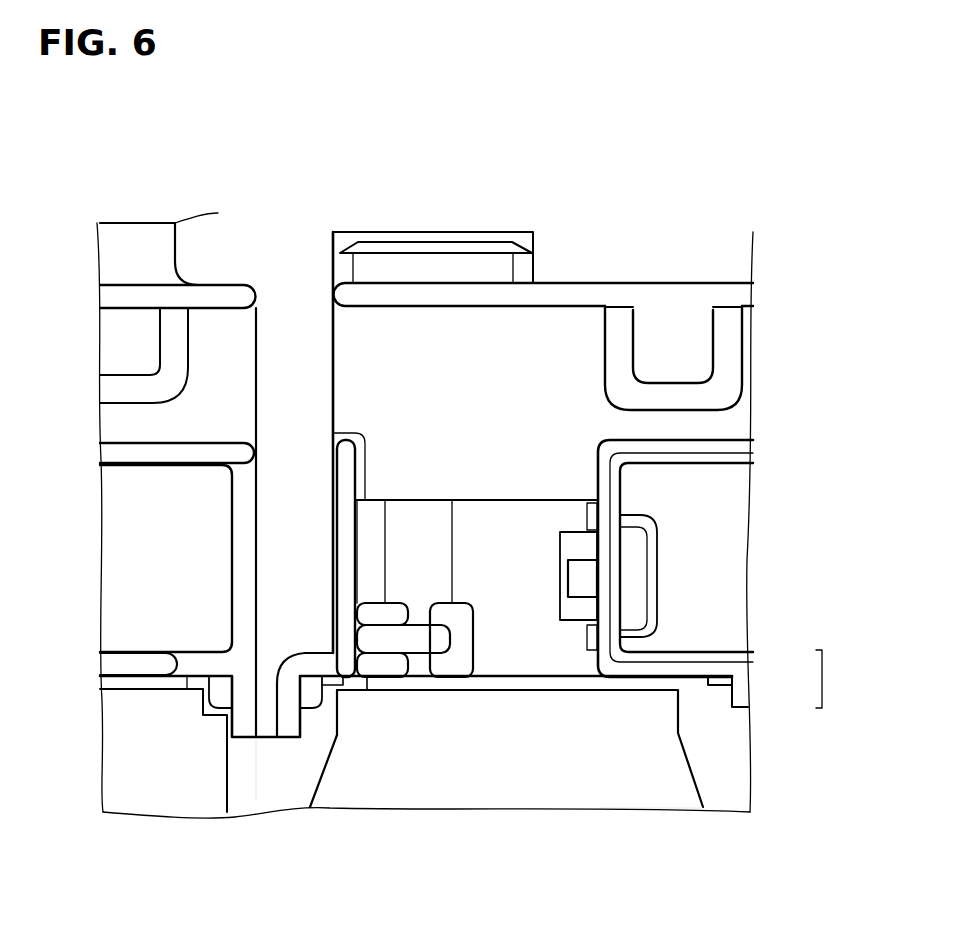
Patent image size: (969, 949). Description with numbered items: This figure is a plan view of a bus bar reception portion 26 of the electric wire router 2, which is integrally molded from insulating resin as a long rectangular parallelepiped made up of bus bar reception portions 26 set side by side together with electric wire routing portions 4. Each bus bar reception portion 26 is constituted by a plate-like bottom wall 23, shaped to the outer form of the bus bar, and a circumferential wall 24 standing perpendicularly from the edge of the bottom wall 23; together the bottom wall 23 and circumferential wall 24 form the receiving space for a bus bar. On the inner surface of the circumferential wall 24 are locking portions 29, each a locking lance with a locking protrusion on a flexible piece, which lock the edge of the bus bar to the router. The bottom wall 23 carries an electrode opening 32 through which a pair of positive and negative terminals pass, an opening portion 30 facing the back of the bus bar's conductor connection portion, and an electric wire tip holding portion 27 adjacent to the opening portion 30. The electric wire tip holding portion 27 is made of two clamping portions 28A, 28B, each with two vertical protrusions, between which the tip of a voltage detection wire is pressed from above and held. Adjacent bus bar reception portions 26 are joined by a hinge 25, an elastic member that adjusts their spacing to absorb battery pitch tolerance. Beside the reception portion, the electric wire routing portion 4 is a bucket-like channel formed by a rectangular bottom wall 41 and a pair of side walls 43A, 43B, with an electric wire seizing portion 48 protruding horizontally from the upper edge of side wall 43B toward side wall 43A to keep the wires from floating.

The electric wire router 2 is at (460, 228).
The electric wire routing portion 4 is at (210, 367).
The bottom wall 41 is at (485, 388).
The side wall 43A is at (163, 452).
The side wall 43B is at (148, 297).
The electric wire seizing portion 48 is at (148, 343).
The opening portion 30 is at (448, 547).
The locking portion 29 is at (575, 575).
The clamping portion 28A is at (476, 627).
The clamping portion 28B is at (365, 680).
The electric wire tip holding portion 27 is at (480, 651).
The circumferential wall 24 is at (692, 668).
The bottom wall 23 is at (722, 750).
The bus bar reception portion 26 is at (838, 679).
The hinge 25 is at (267, 785).
The electrode opening 32 is at (685, 758).